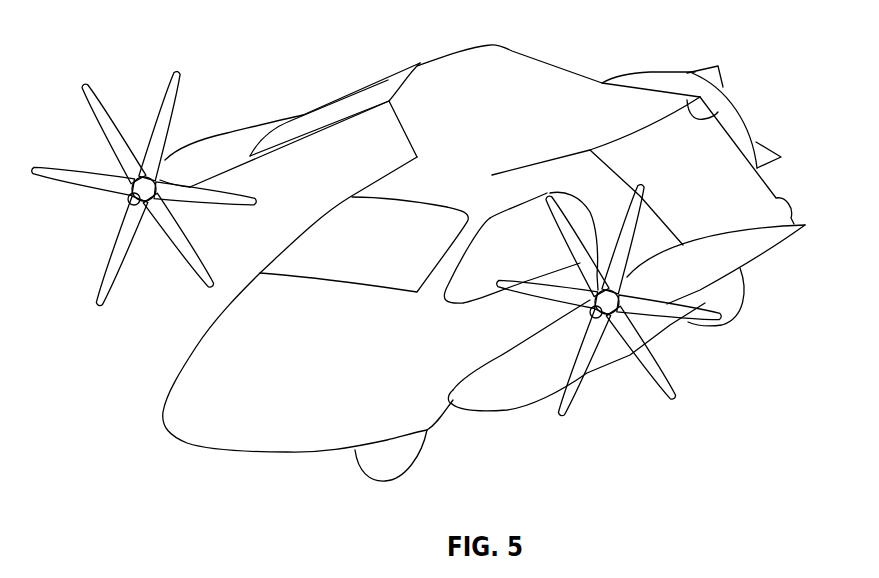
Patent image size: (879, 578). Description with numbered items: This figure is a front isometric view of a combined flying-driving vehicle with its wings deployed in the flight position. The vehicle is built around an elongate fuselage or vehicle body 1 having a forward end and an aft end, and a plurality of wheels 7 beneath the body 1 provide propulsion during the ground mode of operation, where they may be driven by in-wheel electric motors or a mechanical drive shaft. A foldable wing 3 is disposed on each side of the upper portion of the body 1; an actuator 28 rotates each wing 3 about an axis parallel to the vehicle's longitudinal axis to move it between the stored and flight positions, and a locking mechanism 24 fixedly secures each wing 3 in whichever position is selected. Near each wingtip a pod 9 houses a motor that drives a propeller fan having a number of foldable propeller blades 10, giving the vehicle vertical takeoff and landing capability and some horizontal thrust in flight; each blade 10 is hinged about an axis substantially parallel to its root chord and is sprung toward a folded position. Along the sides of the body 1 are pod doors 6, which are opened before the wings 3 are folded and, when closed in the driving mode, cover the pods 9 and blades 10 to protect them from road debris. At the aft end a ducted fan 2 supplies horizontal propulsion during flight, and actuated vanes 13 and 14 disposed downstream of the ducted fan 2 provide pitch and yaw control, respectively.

The fuselage/vehicle body 1 is at (190, 423).
The ducted fan 2 is at (647, 82).
The wing 3 is at (463, 68).
The pod door 6 is at (497, 388).
The wheel 7 is at (410, 457).
The pod 9 is at (243, 138).
The propeller blade 10 is at (650, 380).
The pitch vane 13 is at (773, 147).
The yaw vane 14 is at (727, 83).
The locking mechanism 24 is at (388, 75).
The actuator 28 is at (720, 115).